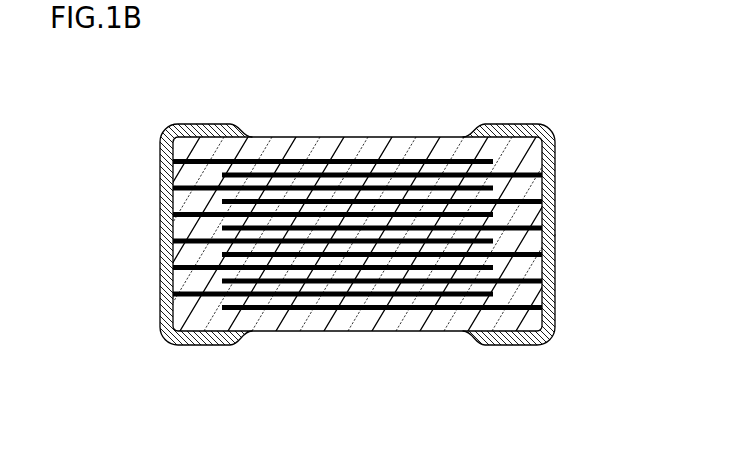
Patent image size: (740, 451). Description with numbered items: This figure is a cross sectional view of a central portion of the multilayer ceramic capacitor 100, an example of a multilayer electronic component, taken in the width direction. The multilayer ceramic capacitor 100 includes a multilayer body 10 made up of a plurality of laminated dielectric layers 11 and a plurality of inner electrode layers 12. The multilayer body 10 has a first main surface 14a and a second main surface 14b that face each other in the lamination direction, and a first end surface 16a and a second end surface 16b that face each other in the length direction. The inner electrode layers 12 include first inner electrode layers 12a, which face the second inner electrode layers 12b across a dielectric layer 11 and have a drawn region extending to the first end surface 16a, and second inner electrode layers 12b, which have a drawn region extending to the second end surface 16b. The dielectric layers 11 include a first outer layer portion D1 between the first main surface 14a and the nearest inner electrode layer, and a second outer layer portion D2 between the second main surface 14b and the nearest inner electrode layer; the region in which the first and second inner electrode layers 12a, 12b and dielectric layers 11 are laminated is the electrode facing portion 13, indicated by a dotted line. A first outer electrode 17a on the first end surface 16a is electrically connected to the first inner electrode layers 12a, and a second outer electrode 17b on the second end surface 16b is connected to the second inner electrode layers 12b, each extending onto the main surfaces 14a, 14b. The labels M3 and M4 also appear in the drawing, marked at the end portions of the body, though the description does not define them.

The multilayer ceramic capacitor 100 is at (612, 79).
The multilayer body 10 is at (372, 137).
The dielectric layer 11 is at (407, 137).
The inner electrode layer 12 is at (357, 185).
The first inner electrode layer 12a is at (245, 91).
The second inner electrode layer 12b is at (287, 138).
The electrode facing portion 13 is at (501, 167).
The first main surface 14a is at (447, 137).
The second main surface 14b is at (445, 333).
The first end surface 16a is at (168, 260).
The second end surface 16b is at (546, 250).
The first outer electrode 17a is at (171, 192).
The second outer electrode 17b is at (546, 188).
The third measurement position M3 is at (192, 227).
The fourth measurement position M4 is at (548, 218).
The first outer layer portion D1 is at (240, 142).
The second outer layer portion D2 is at (305, 323).